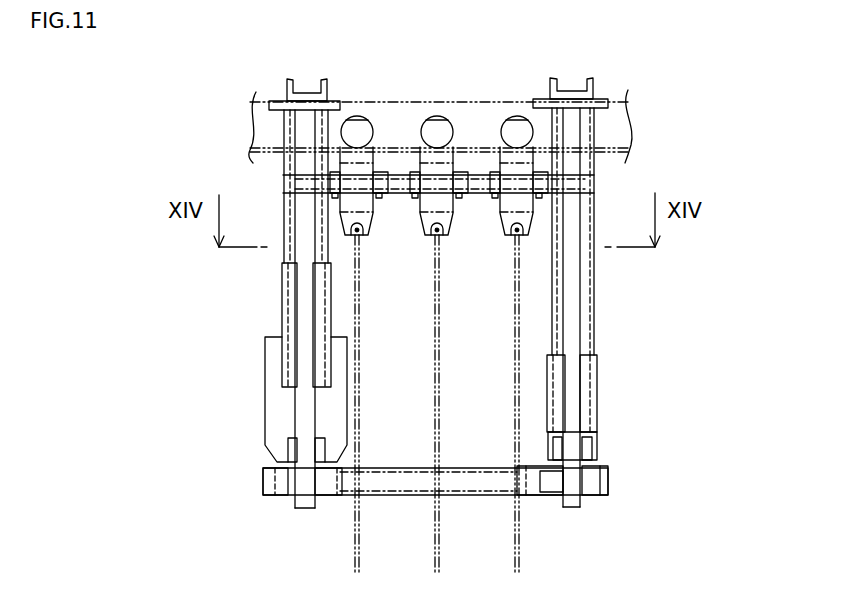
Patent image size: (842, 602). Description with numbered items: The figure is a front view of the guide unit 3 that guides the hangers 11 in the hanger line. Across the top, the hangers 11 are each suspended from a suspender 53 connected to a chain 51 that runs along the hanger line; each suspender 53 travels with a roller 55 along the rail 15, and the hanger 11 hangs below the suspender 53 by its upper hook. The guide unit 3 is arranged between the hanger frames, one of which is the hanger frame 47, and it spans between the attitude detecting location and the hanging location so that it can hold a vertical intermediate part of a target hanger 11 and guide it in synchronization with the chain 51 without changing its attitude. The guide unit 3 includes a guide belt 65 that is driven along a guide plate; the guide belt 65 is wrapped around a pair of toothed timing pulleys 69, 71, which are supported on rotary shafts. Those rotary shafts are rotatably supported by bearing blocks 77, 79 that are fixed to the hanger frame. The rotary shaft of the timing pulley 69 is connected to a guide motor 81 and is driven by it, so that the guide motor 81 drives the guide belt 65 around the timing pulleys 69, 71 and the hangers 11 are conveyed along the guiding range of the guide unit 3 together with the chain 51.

The guide unit 3 is at (622, 487).
The hanger 11 is at (620, 82).
The rail 15 is at (632, 127).
The hanger frame 47 is at (300, 302).
The chain 51 is at (397, 175).
The suspender 53 is at (362, 180).
The roller 55 is at (363, 115).
The guide belt 65 is at (462, 498).
The timing pulley 69 is at (328, 488).
The timing pulley 71 is at (553, 484).
The bearing block 77 is at (287, 449).
The bearing block 79 is at (590, 448).
The guide motor 81 is at (287, 357).